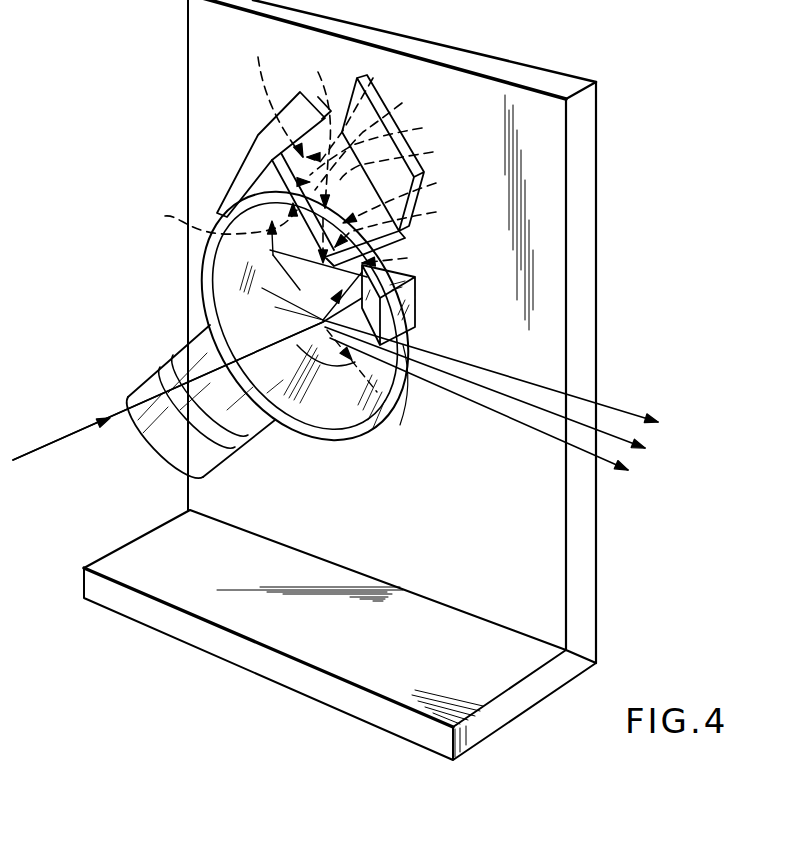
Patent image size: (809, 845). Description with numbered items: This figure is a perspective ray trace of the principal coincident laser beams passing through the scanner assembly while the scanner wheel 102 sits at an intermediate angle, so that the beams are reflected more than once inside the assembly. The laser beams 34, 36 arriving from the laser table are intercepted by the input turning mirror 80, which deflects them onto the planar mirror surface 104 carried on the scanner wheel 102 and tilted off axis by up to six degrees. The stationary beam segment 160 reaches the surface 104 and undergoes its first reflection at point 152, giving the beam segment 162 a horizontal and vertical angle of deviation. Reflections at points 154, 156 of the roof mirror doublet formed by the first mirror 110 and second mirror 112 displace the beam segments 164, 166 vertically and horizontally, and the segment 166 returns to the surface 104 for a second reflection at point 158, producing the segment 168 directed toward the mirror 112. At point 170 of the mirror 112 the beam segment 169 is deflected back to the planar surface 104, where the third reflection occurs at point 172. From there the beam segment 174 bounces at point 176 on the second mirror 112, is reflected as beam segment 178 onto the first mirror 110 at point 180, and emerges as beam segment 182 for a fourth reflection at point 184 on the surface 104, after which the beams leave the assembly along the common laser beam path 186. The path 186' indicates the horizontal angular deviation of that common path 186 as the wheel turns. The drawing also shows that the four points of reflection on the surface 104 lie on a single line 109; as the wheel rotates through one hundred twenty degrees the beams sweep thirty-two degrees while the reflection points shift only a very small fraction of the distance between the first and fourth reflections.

The input light beam 34 is at (98, 421).
The input light beam 36 is at (168, 391).
The input turning mirror 80 is at (412, 300).
The scanner wheel 102 is at (205, 291).
The planar mirror surface 104 is at (350, 432).
The line 109 is at (406, 422).
The first mirror 110 is at (258, 147).
The second mirror 112 is at (410, 240).
The point 152 is at (207, 273).
The point 154 is at (268, 187).
The point 156 is at (383, 144).
The point 158 is at (292, 305).
The beam segment 160 is at (284, 262).
The beam segment 162 is at (273, 255).
The beam segment 164 is at (376, 139).
The beam segment 166 is at (404, 159).
The beam segment 168 is at (401, 259).
The beam segment 169 is at (403, 223).
The point 170 is at (407, 196).
The point 172 is at (275, 307).
The beam segment 174 is at (370, 84).
The point 176 is at (318, 159).
The beam segment 178 is at (250, 47).
The point 180 is at (262, 118).
The beam segment 182 is at (211, 218).
The point 184 is at (308, 340).
The laser beam path 186 is at (513, 423).
The path 186' is at (492, 371).